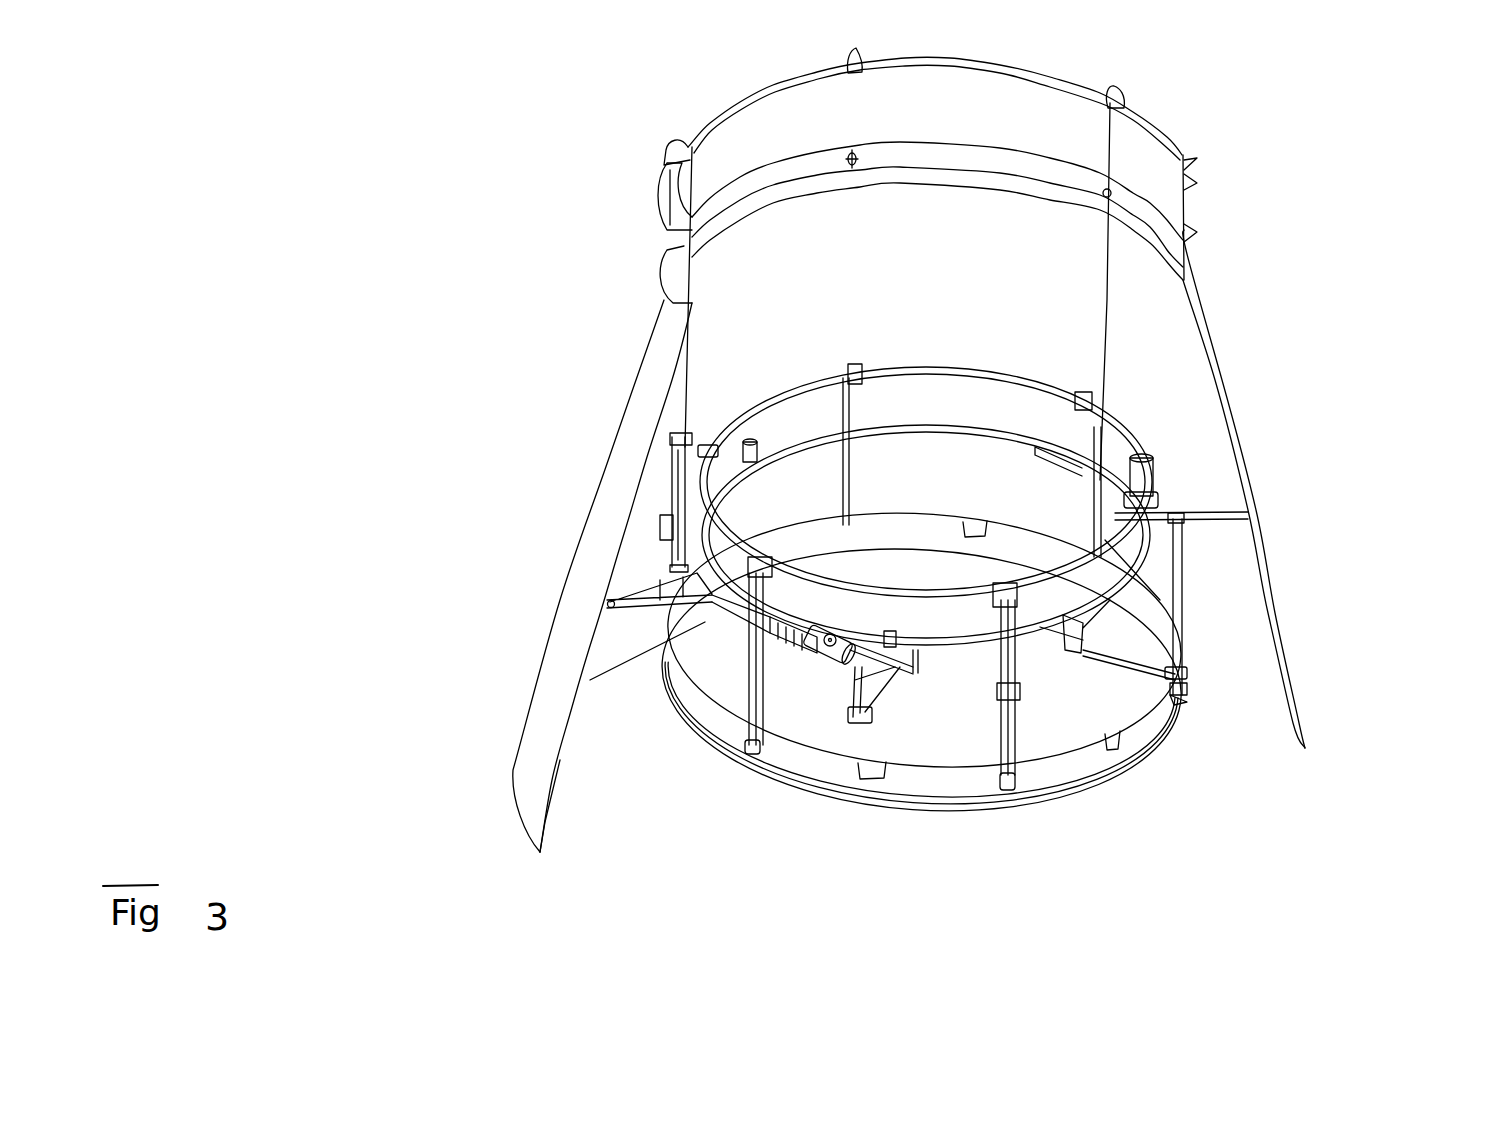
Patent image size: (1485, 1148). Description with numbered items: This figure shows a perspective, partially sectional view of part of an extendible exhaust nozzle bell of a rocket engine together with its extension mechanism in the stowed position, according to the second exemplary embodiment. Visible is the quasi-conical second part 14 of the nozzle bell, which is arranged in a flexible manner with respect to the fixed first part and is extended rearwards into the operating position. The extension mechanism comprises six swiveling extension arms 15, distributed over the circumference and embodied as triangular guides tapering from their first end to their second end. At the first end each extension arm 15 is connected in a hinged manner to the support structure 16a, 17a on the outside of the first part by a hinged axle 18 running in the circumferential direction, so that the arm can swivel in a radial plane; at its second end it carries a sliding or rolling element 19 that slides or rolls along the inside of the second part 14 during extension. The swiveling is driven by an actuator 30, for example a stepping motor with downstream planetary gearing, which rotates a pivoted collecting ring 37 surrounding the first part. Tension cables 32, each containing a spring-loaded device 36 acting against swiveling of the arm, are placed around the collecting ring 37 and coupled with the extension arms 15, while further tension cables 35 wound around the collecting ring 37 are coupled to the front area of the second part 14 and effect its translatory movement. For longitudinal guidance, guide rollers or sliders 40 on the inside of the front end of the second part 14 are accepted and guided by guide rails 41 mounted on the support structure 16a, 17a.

The second part of the exhaust nozzle bell 14 is at (968, 232).
The tension cable 35 is at (1108, 325).
The guide rollers or sliders 40 is at (693, 252).
The collecting ring 37 is at (755, 406).
The support structure 16a is at (940, 640).
The actuator 30 is at (1143, 467).
The support structure 17a is at (782, 760).
The spring-loaded device 36 is at (623, 637).
The tension cable 32 is at (830, 713).
The guide rails 41 is at (1017, 727).
The extension arms 15 is at (1183, 662).
The sliding or rolling element 19 is at (1180, 687).
The hinged axle 18 is at (1075, 650).